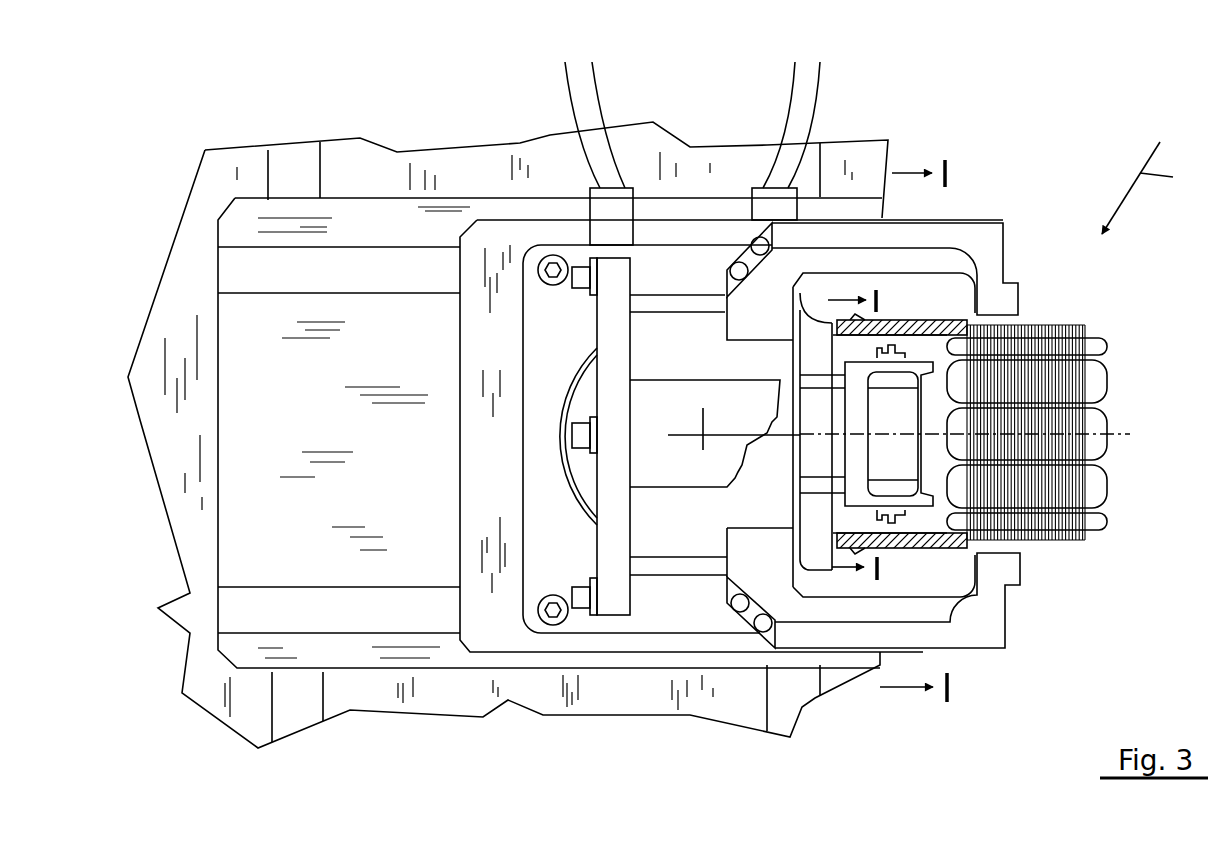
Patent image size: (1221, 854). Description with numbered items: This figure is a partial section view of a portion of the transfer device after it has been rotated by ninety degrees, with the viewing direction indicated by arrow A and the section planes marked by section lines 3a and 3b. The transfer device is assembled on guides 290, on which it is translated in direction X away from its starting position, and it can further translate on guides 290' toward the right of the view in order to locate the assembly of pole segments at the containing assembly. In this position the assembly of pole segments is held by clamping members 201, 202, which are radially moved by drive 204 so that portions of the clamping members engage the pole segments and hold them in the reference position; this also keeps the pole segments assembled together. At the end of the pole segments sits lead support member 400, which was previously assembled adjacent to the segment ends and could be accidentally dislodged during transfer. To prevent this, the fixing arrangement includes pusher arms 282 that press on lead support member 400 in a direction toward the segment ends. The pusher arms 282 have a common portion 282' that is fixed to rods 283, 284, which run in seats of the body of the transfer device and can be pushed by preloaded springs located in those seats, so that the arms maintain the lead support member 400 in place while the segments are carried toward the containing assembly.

The guides 290 is at (508, 455).
The guides 290' is at (550, 433).
The drive 204 is at (673, 523).
The clamping member 201 is at (983, 235).
The clamping member 202 is at (972, 632).
The lead support member 400 is at (930, 507).
The rod 284 is at (818, 380).
The rod 283 is at (820, 482).
The common portion 282' is at (839, 434).
The pusher arms 282 is at (893, 434).
The section line 3a is at (910, 168).
The section line 3b is at (868, 315).
The viewing direction A is at (1147, 188).